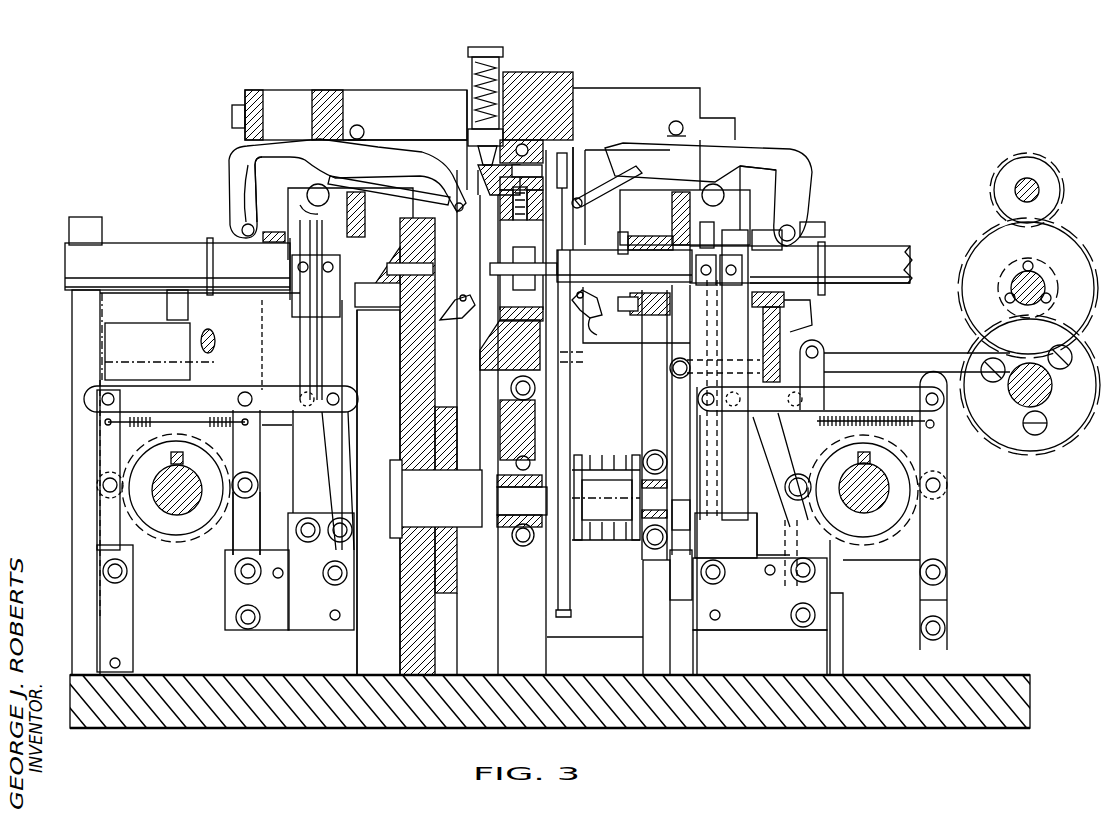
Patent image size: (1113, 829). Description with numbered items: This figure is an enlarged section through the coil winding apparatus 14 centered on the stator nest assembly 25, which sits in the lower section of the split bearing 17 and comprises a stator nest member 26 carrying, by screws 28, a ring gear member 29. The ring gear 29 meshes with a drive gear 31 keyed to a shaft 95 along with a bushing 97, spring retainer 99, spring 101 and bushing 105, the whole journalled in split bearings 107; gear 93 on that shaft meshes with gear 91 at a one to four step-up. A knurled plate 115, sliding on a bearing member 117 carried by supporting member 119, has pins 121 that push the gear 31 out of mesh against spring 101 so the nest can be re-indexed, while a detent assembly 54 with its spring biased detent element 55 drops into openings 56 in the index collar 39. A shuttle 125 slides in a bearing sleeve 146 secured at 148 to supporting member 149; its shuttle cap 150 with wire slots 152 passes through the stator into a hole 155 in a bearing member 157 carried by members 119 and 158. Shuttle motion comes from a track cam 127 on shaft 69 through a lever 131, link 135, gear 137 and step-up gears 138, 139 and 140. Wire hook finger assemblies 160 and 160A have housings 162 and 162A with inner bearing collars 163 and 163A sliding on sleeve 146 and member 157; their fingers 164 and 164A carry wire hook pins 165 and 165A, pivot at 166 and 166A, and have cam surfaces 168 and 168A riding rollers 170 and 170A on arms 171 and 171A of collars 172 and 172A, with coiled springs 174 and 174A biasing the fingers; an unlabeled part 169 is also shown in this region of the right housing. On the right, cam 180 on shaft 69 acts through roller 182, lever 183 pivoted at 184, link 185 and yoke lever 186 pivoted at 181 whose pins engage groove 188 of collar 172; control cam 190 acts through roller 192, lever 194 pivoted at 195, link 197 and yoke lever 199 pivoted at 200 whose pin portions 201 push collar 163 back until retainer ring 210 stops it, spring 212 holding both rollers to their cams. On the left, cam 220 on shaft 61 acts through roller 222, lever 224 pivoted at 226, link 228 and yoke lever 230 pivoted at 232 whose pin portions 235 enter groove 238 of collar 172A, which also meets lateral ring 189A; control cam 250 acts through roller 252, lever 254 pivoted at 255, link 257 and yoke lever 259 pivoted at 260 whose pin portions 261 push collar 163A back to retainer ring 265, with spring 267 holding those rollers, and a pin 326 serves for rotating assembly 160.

The machine 14 is at (148, 225).
The split bearing 17 is at (580, 98).
The stator nest assembly 25 is at (476, 198).
The stator nest member 26 is at (445, 295).
The screws 28 is at (570, 365).
The ring gear member 29 is at (573, 152).
The drive gear 31 is at (572, 597).
The index collar 39 is at (485, 375).
The detent assembly 54 is at (510, 58).
The spring biased detent element 55 is at (483, 160).
The openings 56 is at (480, 160).
The shaft 61 is at (165, 495).
The shaft 69 is at (858, 498).
The gear 91 is at (660, 423).
The gear 93 is at (690, 505).
The shaft 95 is at (588, 525).
The bushing 97 is at (642, 470).
The spring retainer 99 is at (578, 455).
The spring 101 is at (605, 525).
The bushing 105 is at (495, 472).
The split bearings 107 is at (490, 560).
The knurled plate 115 is at (457, 600).
The bearing member 117 is at (447, 502).
The supporting member 119 is at (400, 585).
The pins 121 is at (490, 525).
The shuttle 125 is at (917, 250).
The track cam 127 is at (862, 562).
The lever 131 is at (812, 348).
The link 135 is at (845, 355).
The gear 137 is at (1060, 458).
The gear 138 is at (995, 292).
The gear 139 is at (975, 285).
The gear 140 is at (995, 175).
The bearing sleeve 146 is at (870, 248).
The securing point 148 is at (618, 233).
The supporting member 149 is at (648, 392).
The shuttle cap 150 is at (500, 300).
The wire slots 152 is at (540, 245).
The hole 155 is at (430, 262).
The bearing member 157 is at (220, 240).
The supporting member 158 is at (72, 300).
The wire hook finger assembly 160 is at (652, 110).
The wire hook finger assembly 160A is at (392, 130).
The housing 162 is at (780, 195).
The housing 162A is at (232, 158).
The inner bearing collar 163 is at (790, 222).
The inner bearing collar 163A is at (232, 185).
The wire hook finger elements 164 is at (730, 148).
The wire hook finger elements 164A is at (318, 155).
The wire hook pin element 165 is at (600, 175).
The wire hook pin element 165A is at (462, 332).
The pivot connection 166 is at (790, 212).
The pivot connection 166A is at (235, 222).
The cam surface 168 is at (732, 176).
The cam surface 168A is at (282, 186).
The screw 169 is at (698, 235).
The roller elements 170 is at (713, 186).
The roller elements 170A is at (322, 186).
The arms 171 is at (725, 200).
The arms 171A is at (305, 205).
The collar 172 is at (745, 245).
The collar 172A is at (278, 238).
The coiled spring member 174 is at (682, 124).
The coiled spring member 174A is at (357, 126).
The cam 180 is at (855, 418).
The pivot 181 is at (760, 616).
The roller 182 is at (790, 480).
The lever 183 is at (790, 520).
The pivot 184 is at (800, 578).
The link 185 is at (755, 405).
The bifurcated yoke lever 186 is at (748, 345).
The annular groove 188 is at (740, 245).
The lateral ring 189A is at (335, 245).
The control cam 190 is at (905, 505).
The roller 192 is at (950, 473).
The lever 194 is at (942, 523).
The pivot 195 is at (945, 570).
The link 197 is at (858, 405).
The bifurcated yoke lever 199 is at (718, 455).
The pivot 200 is at (730, 520).
The pin portions 201 is at (700, 270).
The retainer ring 210 is at (828, 267).
The spring 212 is at (922, 425).
The cam 220 is at (225, 555).
The roller 222 is at (250, 470).
The lever 224 is at (250, 503).
The pivot 226 is at (232, 578).
The link 228 is at (262, 390).
The bifurcated yoke lever 230 is at (300, 438).
The pivot 232 is at (312, 540).
The pin portions 235 is at (300, 266).
The annular groove 238 is at (275, 255).
The control cam 250 is at (128, 466).
The roller element 252 is at (95, 488).
The lever 254 is at (97, 432).
The pivot 255 is at (125, 580).
The link 257 is at (95, 383).
The bifurcated yoke lever 259 is at (340, 420).
The pivot 260 is at (345, 545).
The pin portions 261 is at (345, 305).
The retainer ring 265 is at (205, 262).
The spring 267 is at (150, 420).
The pin 326 is at (812, 229).